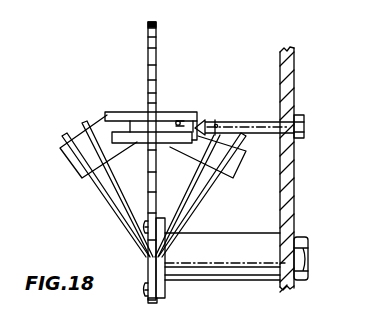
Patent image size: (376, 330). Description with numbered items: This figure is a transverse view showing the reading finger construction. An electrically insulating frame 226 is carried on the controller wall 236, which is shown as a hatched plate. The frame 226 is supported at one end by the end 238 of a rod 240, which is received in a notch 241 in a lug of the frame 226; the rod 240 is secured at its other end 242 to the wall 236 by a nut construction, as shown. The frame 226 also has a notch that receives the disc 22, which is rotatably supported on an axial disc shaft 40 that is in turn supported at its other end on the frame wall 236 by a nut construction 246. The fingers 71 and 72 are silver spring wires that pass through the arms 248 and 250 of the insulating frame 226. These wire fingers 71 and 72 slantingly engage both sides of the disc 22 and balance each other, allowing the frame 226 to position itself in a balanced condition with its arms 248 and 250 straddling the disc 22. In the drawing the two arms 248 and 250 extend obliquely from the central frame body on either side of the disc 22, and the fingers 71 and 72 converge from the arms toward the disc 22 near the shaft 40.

The disc 22 is at (157, 48).
The end of rod 238 is at (147, 125).
The notch 241 is at (181, 121).
The rod 240 is at (233, 121).
The other end of rod 242 is at (304, 121).
The controller wall 236 is at (289, 190).
The nut construction 246 is at (306, 261).
The axial disc shaft 40 is at (230, 268).
The arm of frame 248 is at (80, 172).
The arm of frame 250 is at (237, 165).
The finger 72 is at (108, 170).
The finger 71 is at (112, 188).
The insulating frame 226 is at (51, 160).